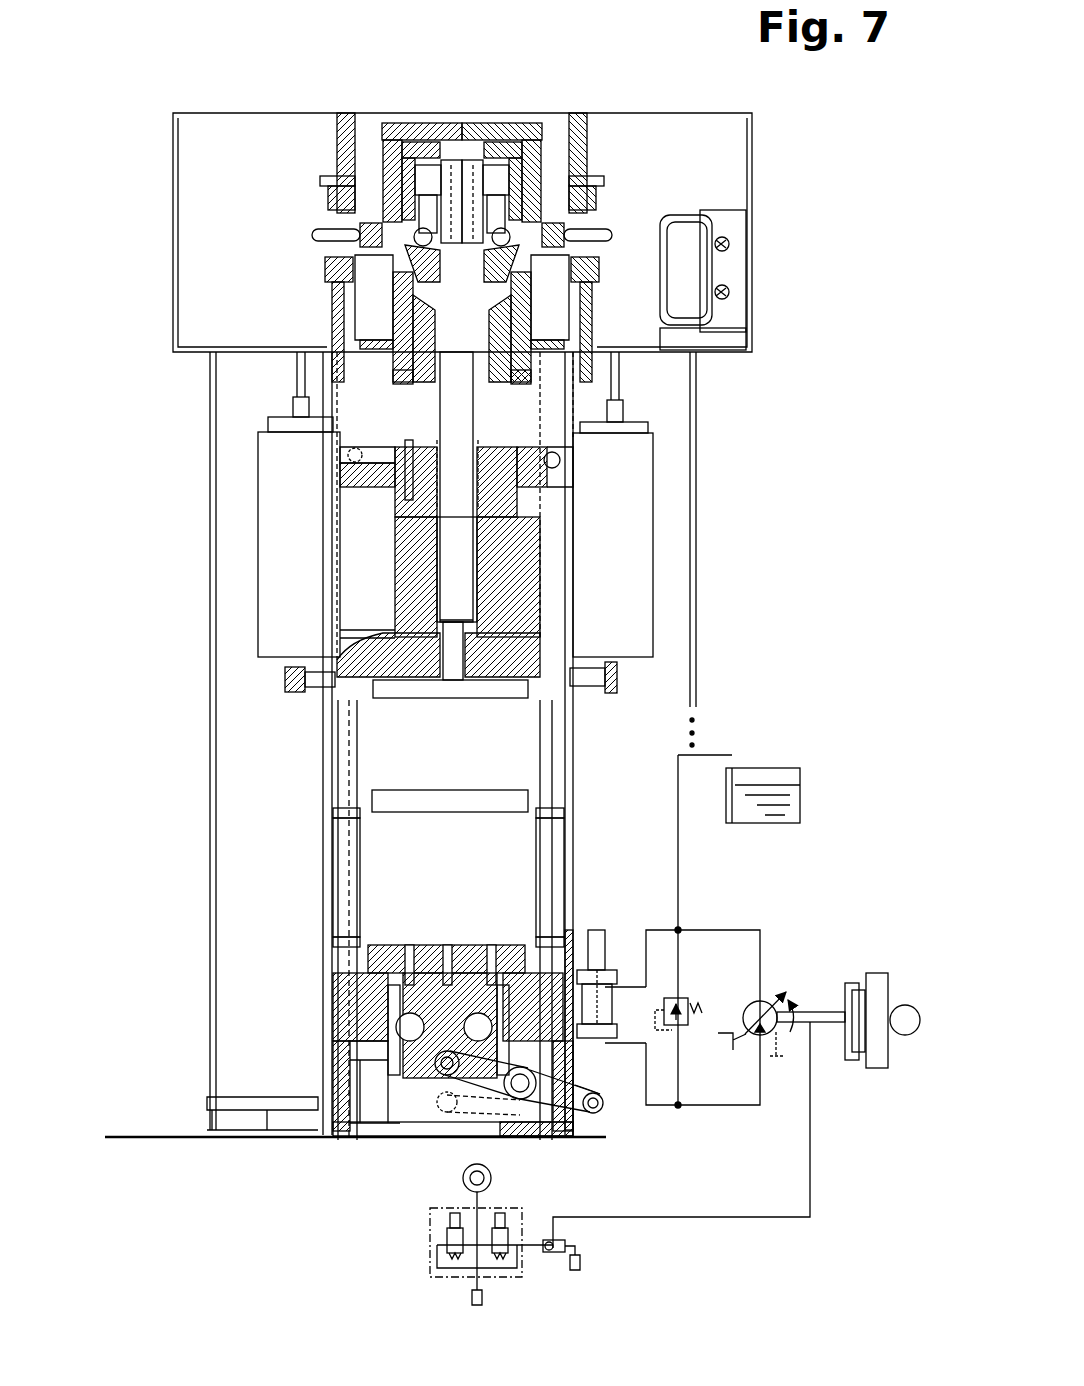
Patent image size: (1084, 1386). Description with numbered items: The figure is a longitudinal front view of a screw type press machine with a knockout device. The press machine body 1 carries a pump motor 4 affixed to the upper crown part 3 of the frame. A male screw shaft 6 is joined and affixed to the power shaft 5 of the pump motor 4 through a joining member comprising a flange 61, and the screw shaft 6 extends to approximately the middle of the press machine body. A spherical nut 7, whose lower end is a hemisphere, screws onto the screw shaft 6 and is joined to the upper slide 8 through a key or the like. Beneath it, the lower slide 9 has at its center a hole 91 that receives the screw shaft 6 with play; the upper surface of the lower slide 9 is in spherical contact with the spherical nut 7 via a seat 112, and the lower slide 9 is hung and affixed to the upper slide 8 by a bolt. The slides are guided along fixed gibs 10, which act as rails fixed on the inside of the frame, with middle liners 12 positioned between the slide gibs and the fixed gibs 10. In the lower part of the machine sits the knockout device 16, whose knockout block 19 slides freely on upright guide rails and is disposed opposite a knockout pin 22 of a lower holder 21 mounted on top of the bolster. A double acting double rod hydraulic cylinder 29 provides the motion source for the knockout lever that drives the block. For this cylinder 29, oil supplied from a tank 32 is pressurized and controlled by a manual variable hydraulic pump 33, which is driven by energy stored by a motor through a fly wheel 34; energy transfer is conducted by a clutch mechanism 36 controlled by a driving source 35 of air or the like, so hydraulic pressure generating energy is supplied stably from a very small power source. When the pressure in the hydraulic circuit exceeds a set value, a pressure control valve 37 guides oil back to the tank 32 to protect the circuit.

The press machine body 1 is at (283, 72).
The upper crown part 3 is at (586, 326).
The pump motor 4 is at (492, 120).
The power shaft 5 is at (370, 320).
The male screw shaft 6 is at (462, 408).
The flange 61 is at (425, 372).
The spherical nut 7 is at (428, 468).
The upper slide 8 is at (355, 478).
The middle liner 12 is at (565, 478).
The seat 112 is at (397, 520).
The hole 91 is at (475, 580).
The lower slide 9 is at (512, 640).
The fixed gib 10 is at (345, 751).
The knockout block 19 is at (430, 948).
The lower holder 21 is at (380, 950).
The knockout pin 22 is at (448, 975).
The knockout device 16 is at (345, 985).
The double acting double rod hydraulic cylinder 29 is at (598, 930).
The tank 32 is at (812, 800).
The manual variable hydraulic pump 33 is at (774, 996).
The fly wheel 34 is at (880, 972).
The driving source 35 is at (463, 1178).
The clutch mechanism 36 is at (853, 980).
The pressure control valve 37 is at (688, 998).